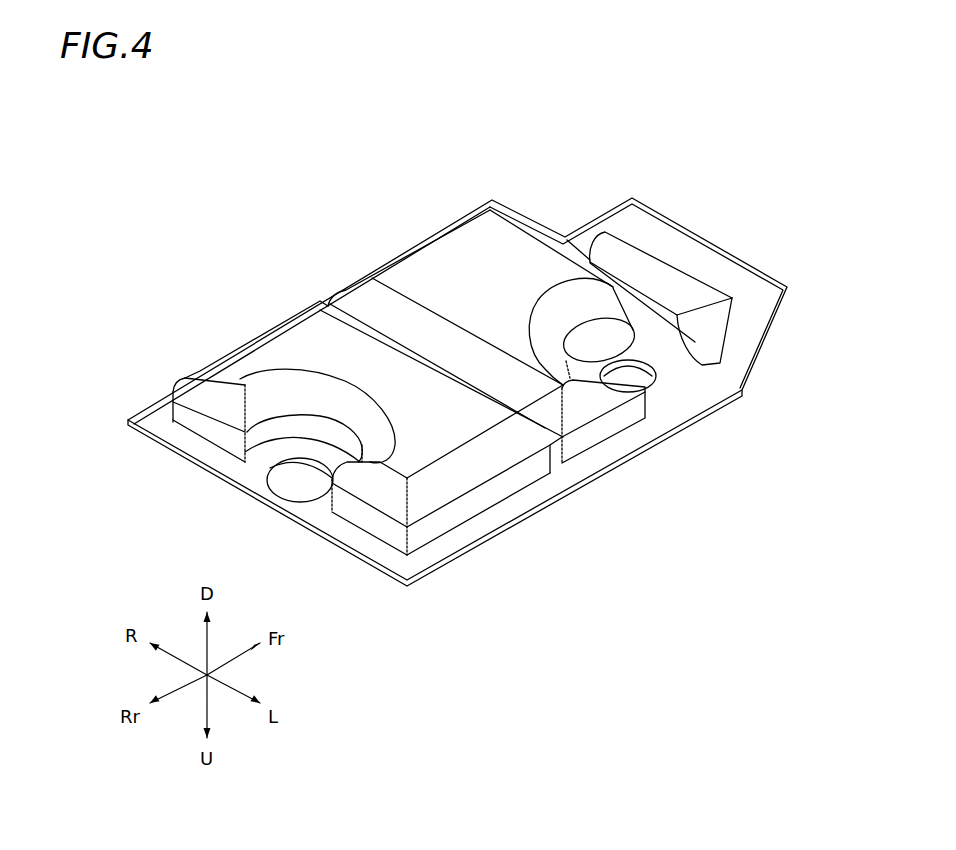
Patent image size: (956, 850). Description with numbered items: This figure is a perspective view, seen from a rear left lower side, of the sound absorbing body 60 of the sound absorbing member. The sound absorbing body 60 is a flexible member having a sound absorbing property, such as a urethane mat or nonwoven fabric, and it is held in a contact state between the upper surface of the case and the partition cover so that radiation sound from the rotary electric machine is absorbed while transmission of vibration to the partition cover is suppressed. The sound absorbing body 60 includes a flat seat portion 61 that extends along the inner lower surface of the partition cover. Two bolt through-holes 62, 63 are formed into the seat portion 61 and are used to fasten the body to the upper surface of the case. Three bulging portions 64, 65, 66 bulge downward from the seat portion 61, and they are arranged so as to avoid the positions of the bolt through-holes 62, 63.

The sound absorbing body 60 is at (768, 240).
The seat portion 61 is at (158, 418).
The bolt through-hole 62 is at (290, 486).
The bolt through-hole 63 is at (655, 375).
The bulging portion 64 is at (300, 350).
The bulging portion 65 is at (467, 263).
The bulging portion 66 is at (658, 277).